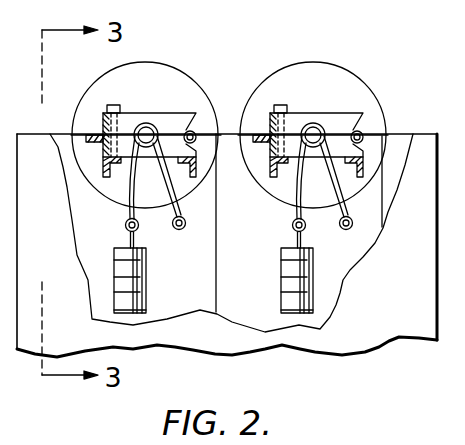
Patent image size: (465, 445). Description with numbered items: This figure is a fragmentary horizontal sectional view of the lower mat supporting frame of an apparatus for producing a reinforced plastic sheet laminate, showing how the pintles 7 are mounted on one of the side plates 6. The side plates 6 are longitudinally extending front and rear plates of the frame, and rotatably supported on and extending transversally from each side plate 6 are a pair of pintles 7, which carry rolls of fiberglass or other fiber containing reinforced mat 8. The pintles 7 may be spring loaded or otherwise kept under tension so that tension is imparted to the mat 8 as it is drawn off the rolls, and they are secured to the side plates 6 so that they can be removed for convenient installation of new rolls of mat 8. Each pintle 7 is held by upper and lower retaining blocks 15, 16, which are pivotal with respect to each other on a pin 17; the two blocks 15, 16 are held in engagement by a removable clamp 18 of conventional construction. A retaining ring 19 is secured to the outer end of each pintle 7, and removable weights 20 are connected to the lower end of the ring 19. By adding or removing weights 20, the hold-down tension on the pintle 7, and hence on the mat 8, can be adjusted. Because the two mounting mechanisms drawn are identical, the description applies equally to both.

The side plates 6 is at (377, 330).
The pintles 7 is at (145, 133).
The reinforced mat 8 is at (177, 82).
The upper retaining block 15 is at (340, 117).
The lower retaining block 16 is at (349, 152).
The pin 17 is at (367, 128).
The removable clamp 18 is at (280, 105).
The retaining ring 19 is at (295, 178).
The removable weights 20 is at (282, 287).